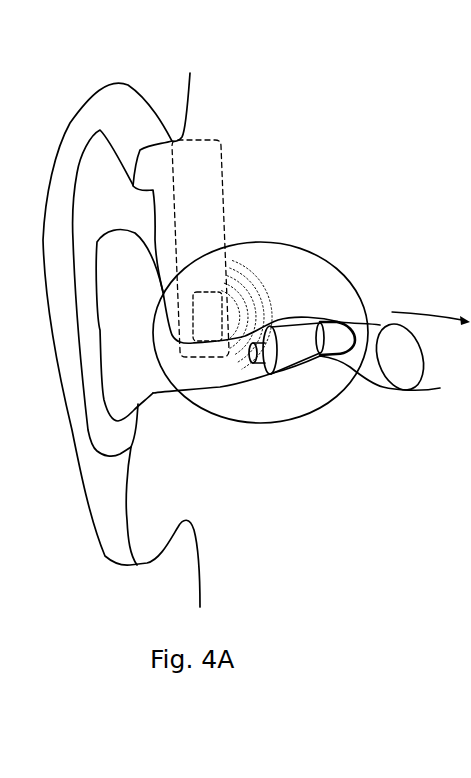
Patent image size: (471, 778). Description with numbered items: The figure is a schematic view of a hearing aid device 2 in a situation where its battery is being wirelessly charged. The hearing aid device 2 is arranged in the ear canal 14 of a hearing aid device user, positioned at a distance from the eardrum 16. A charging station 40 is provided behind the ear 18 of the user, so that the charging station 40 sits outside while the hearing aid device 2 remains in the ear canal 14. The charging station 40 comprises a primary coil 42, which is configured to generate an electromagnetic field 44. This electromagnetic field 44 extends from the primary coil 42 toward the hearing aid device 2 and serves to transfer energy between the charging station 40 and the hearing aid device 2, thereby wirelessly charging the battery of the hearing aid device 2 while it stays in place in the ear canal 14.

The hearing aid device 2 is at (298, 315).
The ear canal 14 is at (238, 376).
The eardrum 16 is at (382, 382).
The ear 18 is at (102, 107).
The charging station 40 is at (208, 152).
The primary coil 42 is at (210, 300).
The electromagnetic field 44 is at (251, 288).